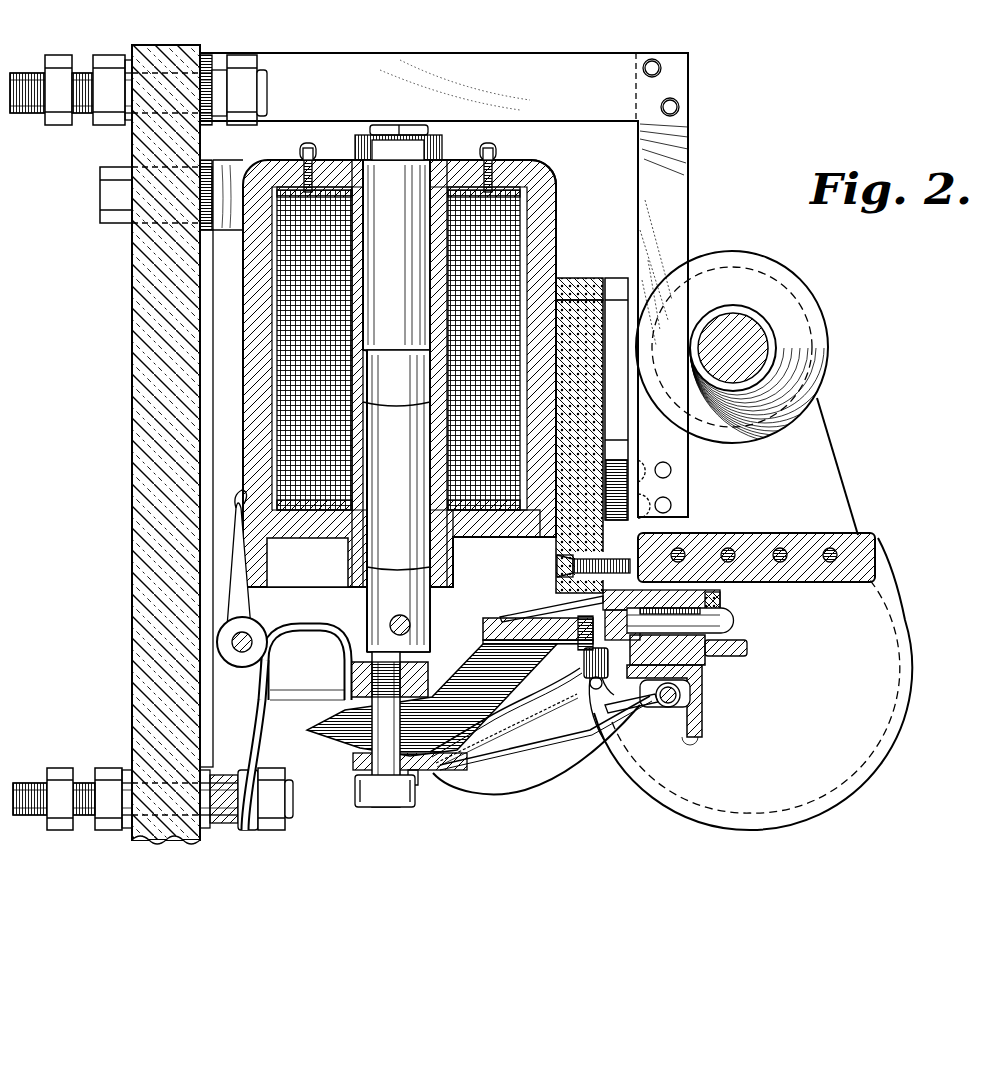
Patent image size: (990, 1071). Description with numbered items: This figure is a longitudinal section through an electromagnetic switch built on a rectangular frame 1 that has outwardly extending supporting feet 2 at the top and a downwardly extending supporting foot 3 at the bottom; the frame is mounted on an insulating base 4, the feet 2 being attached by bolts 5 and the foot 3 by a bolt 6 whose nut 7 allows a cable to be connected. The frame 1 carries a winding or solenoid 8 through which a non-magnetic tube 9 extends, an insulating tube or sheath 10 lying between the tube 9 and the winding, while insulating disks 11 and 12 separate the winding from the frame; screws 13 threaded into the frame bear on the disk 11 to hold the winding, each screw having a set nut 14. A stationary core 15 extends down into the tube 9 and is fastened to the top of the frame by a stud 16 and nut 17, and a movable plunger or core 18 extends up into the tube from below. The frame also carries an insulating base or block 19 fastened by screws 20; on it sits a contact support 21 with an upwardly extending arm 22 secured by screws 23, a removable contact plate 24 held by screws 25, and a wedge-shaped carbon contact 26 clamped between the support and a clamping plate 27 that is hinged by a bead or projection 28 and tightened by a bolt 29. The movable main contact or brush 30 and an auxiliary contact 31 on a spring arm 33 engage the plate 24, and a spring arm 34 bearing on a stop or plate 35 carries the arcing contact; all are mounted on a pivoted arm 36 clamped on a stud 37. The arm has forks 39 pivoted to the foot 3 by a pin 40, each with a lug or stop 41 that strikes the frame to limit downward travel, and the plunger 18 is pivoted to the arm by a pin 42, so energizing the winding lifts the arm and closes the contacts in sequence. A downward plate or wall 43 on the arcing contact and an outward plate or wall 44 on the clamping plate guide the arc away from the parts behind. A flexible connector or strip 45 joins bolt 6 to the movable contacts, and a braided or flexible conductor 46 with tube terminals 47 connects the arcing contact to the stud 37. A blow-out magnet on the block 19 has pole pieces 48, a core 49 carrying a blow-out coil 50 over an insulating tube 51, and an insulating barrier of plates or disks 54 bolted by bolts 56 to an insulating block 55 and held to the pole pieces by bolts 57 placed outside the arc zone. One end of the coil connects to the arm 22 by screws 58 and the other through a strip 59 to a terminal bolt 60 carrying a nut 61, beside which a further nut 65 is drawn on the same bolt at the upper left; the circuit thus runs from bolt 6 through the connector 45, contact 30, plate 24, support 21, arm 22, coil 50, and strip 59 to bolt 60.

The frame 1 is at (557, 232).
The supporting feet 2 is at (245, 147).
The supporting foot 3 is at (262, 607).
The insulating base 4 is at (248, 147).
The bolts 5 is at (897, 444).
The bolt 6 is at (153, 799).
The nut 7 is at (65, 770).
The winding or solenoid 8 is at (557, 210).
The non-magnetic tube 9 is at (398, 501).
The insulating tube or sheath 10 is at (422, 228).
The insulating disk 11 is at (538, 170).
The insulating disk 12 is at (494, 512).
The screws 13 is at (300, 150).
The set nut 14 is at (312, 150).
The stationary core 15 is at (380, 187).
The stud 16 is at (403, 120).
The nut 17 is at (398, 147).
The movable plunger or core 18 is at (352, 605).
The insulating base or block 19 is at (590, 278).
The screws 20 is at (582, 446).
The contact support 21 is at (548, 605).
The arm 22 is at (616, 399).
The screws 23 is at (556, 568).
The contact plate 24 is at (482, 640).
The screws 25 is at (584, 660).
The carbon contact 26 is at (667, 650).
The clamping plate 27 is at (720, 602).
The bead or projection 28 is at (718, 598).
The bolt 29 is at (738, 622).
The main contact or brush 30 is at (470, 675).
The auxiliary contact 31 is at (602, 690).
The spring arm 33 is at (506, 712).
The spring arm 34 is at (530, 752).
The stop or plate 35 is at (505, 720).
The pivoted arm 36 is at (360, 662).
The stud 37 is at (385, 729).
The forks 39 is at (306, 663).
The pin 40 is at (235, 618).
The lug or stop 41 is at (228, 560).
The pin 42 is at (398, 612).
The plate or wall 43 is at (694, 740).
The plate or wall 44 is at (747, 648).
The flexible connector or strip 45 is at (252, 740).
The braided or flexible conductor 46 is at (520, 790).
The terminals 47 is at (640, 708).
The pole pieces 48 is at (831, 466).
The core 49 is at (752, 330).
The blow-out coil 50 is at (829, 325).
The insulating tube 51 is at (724, 312).
The insulating plates or disks 54 is at (753, 684).
The insulating block 55 is at (840, 580).
The bolts 56 is at (752, 548).
The bolts 57 is at (684, 550).
The screws 58 is at (648, 462).
The strip 59 is at (444, 285).
The bolt 60 is at (260, 90).
The nut 61 is at (108, 125).
The nut 65 is at (30, 100).